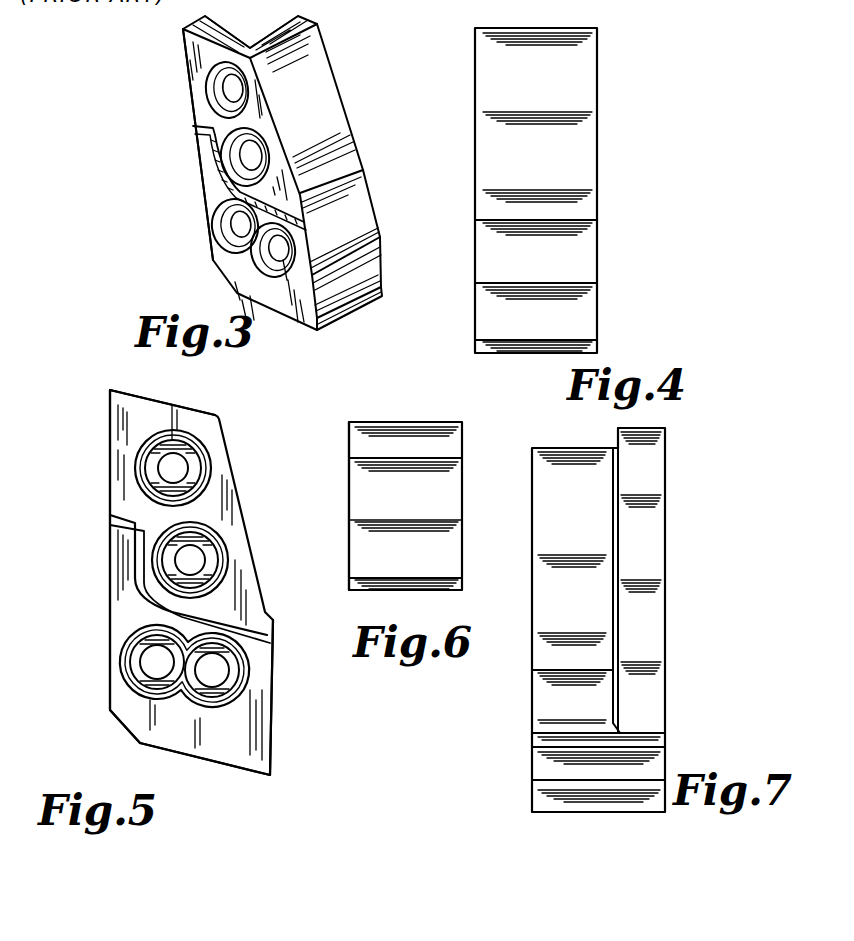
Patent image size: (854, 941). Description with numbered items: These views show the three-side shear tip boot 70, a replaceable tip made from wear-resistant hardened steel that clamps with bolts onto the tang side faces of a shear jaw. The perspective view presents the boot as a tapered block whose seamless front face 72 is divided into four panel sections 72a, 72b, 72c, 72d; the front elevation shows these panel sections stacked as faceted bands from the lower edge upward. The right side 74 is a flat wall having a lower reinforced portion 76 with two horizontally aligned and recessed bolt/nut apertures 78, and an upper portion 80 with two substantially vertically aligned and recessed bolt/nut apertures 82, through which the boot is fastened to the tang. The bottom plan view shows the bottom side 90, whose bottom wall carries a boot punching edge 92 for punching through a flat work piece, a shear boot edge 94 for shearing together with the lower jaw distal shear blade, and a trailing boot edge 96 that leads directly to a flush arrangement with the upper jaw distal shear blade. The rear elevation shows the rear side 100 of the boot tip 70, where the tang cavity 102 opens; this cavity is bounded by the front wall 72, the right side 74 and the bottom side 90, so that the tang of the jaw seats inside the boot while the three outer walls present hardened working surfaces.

In FIG. 3, the three-side shear tip boot 70 is at (345, 73).
In FIG. 5, the three-side shear tip boot 70 is at (243, 437).
In FIG. 6, the three-side shear tip boot 70 is at (380, 413).
In FIG. 7, the front face 72 is at (575, 472).
In FIG. 3, the panel section 72a is at (357, 302).
In FIG. 4, the panel section 72a is at (587, 348).
In FIG. 3, the panel section 72b is at (373, 270).
In FIG. 4, the panel section 72b is at (580, 315).
In FIG. 3, the panel section 72c is at (363, 207).
In FIG. 4, the panel section 72c is at (580, 253).
In FIG. 3, the panel section 72d is at (322, 107).
In FIG. 4, the panel section 72d is at (580, 143).
In FIG. 3, the right side 74 is at (200, 107).
In FIG. 5, the right side 74 is at (123, 441).
In FIG. 7, the right side 74 is at (669, 643).
In FIG. 3, the lower reinforced portion 76 is at (205, 182).
In FIG. 5, the lower reinforced portion 76 is at (122, 570).
In FIG. 6, the lower reinforced portion 76 is at (363, 447).
In FIG. 3, the bolt/nut apertures 78 is at (250, 257).
In FIG. 5, the bolt/nut apertures 78 is at (217, 670).
In FIG. 3, the upper portion 80 is at (200, 50).
In FIG. 5, the upper portion 80 is at (223, 487).
In FIG. 3, the holes 82 is at (257, 152).
In FIG. 5, the holes 82 is at (177, 463).
In FIG. 6, the bottom side 90 is at (445, 513).
In FIG. 7, the bottom side 90 is at (612, 798).
In FIG. 5, the boot punching edge 92 is at (270, 775).
In FIG. 6, the boot punching edge 92 is at (407, 590).
In FIG. 5, the shear boot edge 94 is at (197, 760).
In FIG. 6, the shear boot edge 94 is at (349, 527).
In FIG. 5, the trailing boot edge 96 is at (122, 733).
In FIG. 7, the rear side 100 is at (647, 492).
In FIG. 7, the tang cavity 102 is at (600, 568).